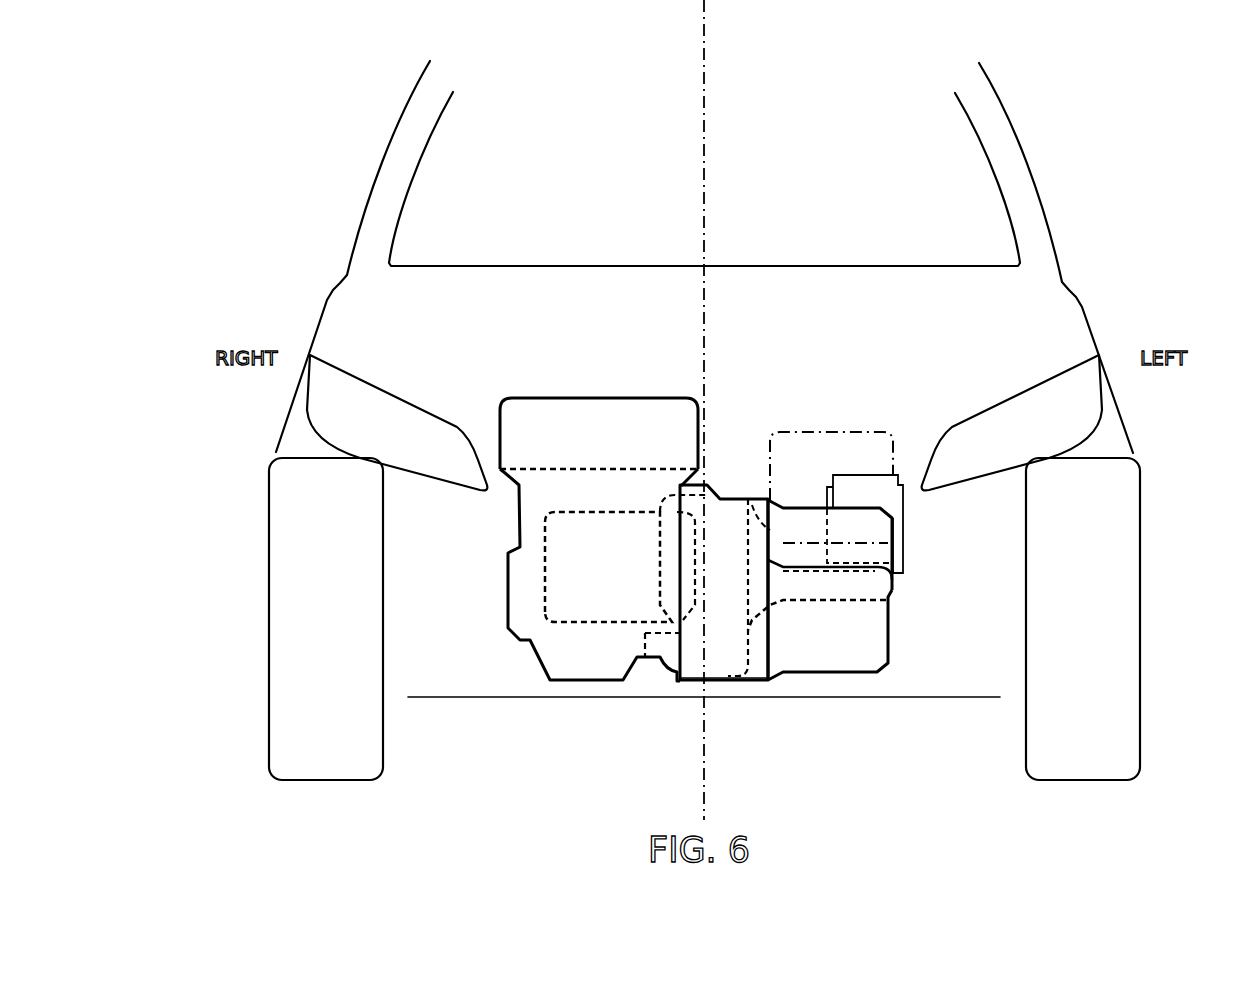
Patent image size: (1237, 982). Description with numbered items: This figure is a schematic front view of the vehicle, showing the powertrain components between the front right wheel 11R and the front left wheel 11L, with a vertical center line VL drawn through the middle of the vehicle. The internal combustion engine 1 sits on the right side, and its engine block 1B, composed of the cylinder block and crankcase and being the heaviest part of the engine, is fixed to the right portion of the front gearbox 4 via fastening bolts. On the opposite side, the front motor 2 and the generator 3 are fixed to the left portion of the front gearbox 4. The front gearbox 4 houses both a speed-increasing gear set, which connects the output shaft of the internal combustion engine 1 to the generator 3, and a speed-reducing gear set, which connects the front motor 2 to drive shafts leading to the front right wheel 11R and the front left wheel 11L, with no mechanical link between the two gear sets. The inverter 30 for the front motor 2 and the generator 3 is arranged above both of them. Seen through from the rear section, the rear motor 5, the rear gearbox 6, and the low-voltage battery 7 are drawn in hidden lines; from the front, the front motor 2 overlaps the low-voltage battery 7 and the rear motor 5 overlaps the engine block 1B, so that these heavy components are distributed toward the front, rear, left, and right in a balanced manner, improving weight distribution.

The internal combustion engine 1 is at (622, 418).
The engine block 1B is at (527, 607).
The front motor 2 is at (878, 527).
The generator 3 is at (877, 641).
The front gearbox 4 is at (757, 668).
The rear motor 5 is at (570, 540).
The rear gearbox 6 is at (713, 655).
The low-voltage battery 7 is at (863, 485).
The inverter 30 is at (800, 430).
The front right wheel 11R is at (283, 683).
The front left wheel 11L is at (1130, 695).
The vehicle center line VL is at (706, 45).